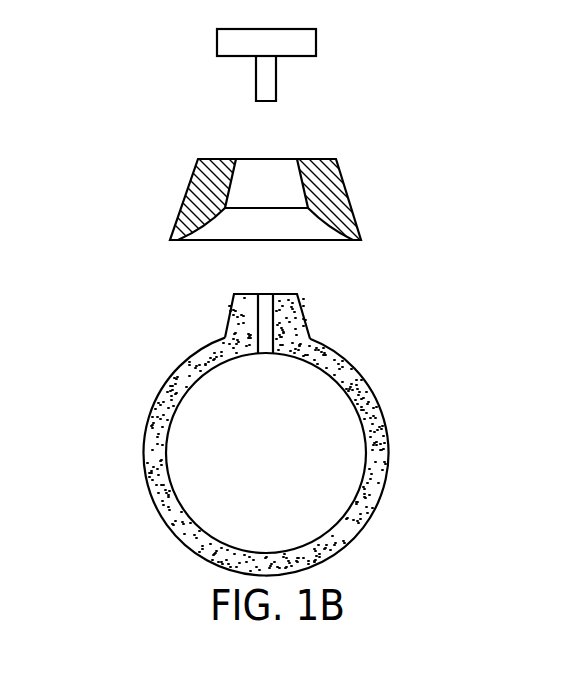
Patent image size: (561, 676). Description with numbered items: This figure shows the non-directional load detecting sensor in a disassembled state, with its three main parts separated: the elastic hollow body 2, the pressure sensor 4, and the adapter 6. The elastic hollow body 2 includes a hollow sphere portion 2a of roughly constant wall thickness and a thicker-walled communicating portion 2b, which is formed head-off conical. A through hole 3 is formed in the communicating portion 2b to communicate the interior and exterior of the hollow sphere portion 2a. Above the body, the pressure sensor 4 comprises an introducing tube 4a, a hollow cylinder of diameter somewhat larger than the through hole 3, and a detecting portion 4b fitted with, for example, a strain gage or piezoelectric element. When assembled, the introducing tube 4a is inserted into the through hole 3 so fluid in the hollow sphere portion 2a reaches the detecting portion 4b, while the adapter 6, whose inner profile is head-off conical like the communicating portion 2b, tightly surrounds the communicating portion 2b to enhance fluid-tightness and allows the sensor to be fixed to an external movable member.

The elastic hollow body 2 is at (252, 435).
The hollow sphere portion 2a is at (372, 472).
The communicating portion 2b is at (288, 320).
The through hole 3 is at (265, 315).
The pressure sensor 4 is at (290, 64).
The introducing tube 4a is at (267, 82).
The detecting portion 4b is at (217, 44).
The adapter 6 is at (198, 192).